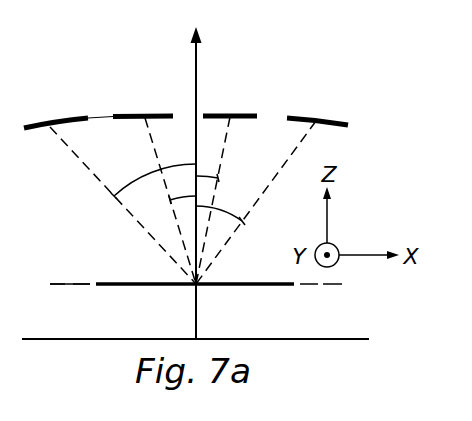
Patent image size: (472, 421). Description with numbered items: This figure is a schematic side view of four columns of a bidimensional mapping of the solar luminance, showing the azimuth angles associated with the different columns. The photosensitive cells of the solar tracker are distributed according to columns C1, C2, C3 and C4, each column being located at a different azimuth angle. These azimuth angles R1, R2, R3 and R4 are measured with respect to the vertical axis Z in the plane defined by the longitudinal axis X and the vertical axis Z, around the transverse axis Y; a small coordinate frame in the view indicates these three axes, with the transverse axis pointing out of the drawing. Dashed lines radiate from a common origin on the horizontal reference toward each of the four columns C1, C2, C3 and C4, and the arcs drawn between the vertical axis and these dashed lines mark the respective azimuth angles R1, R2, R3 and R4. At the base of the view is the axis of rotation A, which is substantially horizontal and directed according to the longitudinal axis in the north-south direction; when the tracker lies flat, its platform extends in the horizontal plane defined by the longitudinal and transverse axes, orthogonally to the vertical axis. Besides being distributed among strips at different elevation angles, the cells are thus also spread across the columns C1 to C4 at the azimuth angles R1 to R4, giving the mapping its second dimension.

The column C1 is at (110, 184).
The column C2 is at (154, 181).
The column C3 is at (226, 181).
The column C4 is at (272, 184).
The azimuth angle R1 is at (153, 175).
The azimuth angle R2 is at (180, 187).
The azimuth angle R3 is at (203, 174).
The azimuth angle R4 is at (222, 205).
The axis of rotation A is at (61, 283).